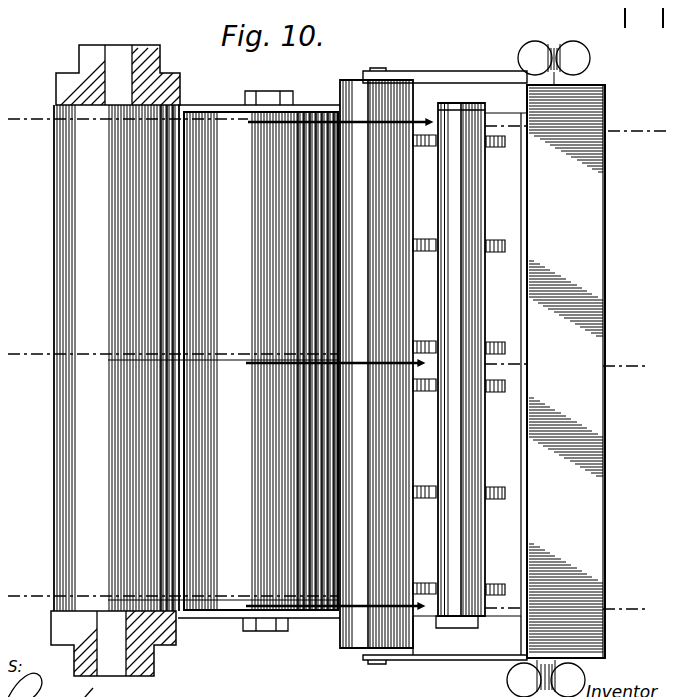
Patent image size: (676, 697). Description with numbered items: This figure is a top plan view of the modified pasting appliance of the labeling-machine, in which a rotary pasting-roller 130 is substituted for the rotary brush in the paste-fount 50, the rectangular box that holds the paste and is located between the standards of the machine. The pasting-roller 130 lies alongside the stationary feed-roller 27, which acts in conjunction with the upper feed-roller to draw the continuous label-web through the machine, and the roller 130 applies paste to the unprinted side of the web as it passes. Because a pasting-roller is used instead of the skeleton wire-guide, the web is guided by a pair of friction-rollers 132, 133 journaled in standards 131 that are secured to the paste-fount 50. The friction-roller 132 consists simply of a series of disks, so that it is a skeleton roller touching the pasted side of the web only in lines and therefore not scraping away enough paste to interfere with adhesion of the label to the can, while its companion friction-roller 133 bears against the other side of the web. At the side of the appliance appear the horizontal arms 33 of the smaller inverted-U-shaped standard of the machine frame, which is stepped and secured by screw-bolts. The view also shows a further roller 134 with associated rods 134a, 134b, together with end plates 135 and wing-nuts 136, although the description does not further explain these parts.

The feed-roller 27 is at (188, 366).
The paste-fount 50 is at (204, 101).
The rotary pasting-roller 130 is at (261, 361).
The roll 134 is at (376, 364).
The rod 134a is at (339, 258).
The rod 134b is at (335, 596).
The friction-roller 133 is at (460, 365).
The skeleton friction-roller 132 is at (487, 332).
The horizontal arms 33 is at (509, 371).
The standards 131 is at (467, 635).
The plate 135 is at (459, 70).
The wing nut 136 is at (578, 54).